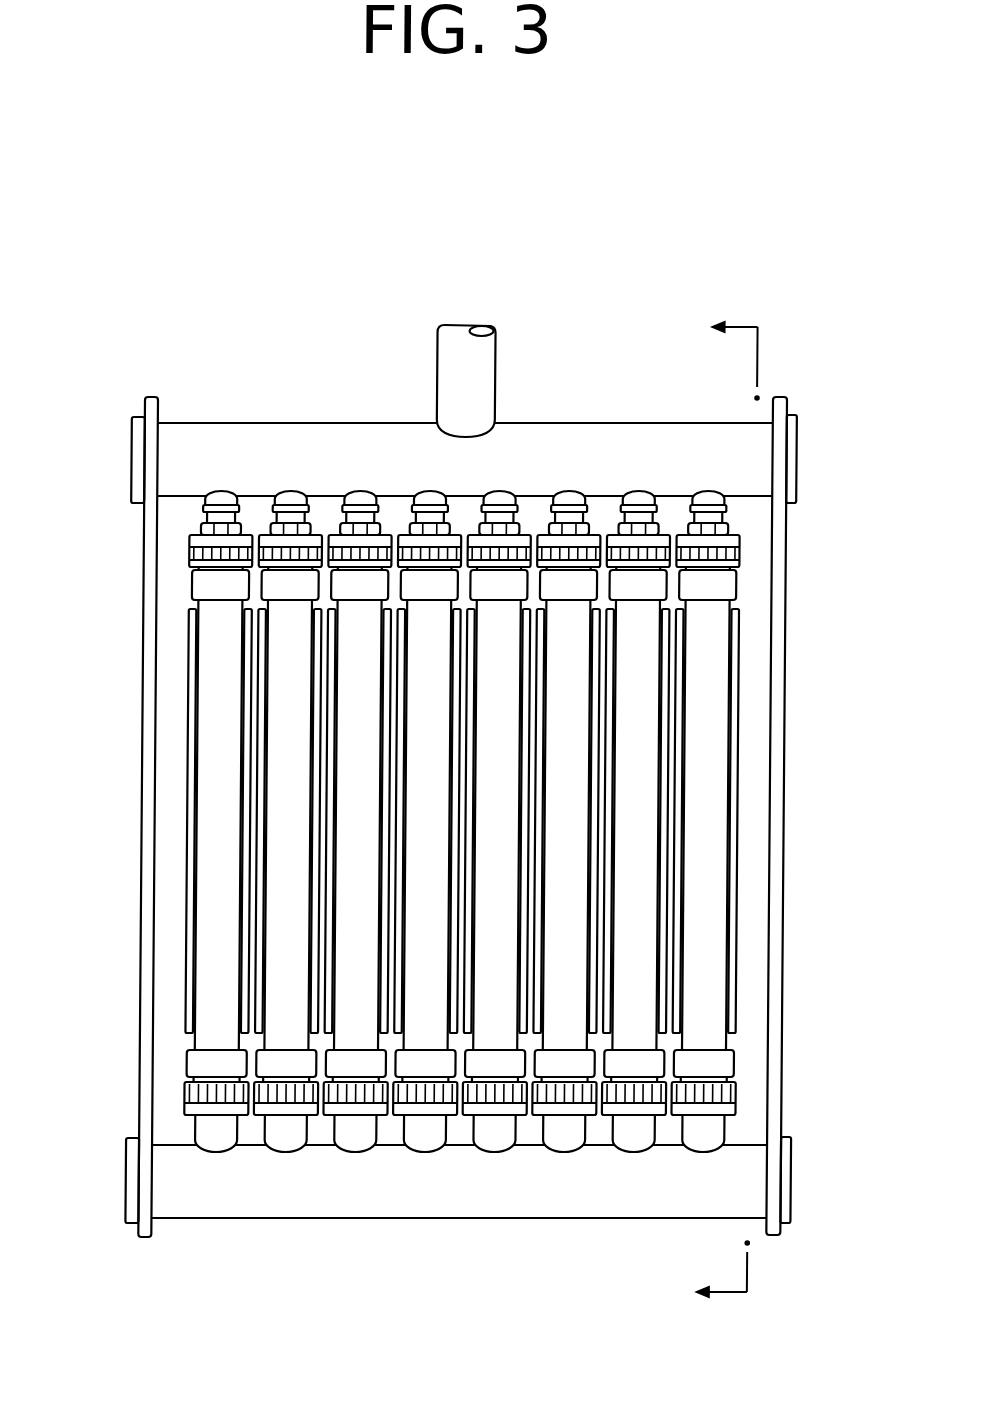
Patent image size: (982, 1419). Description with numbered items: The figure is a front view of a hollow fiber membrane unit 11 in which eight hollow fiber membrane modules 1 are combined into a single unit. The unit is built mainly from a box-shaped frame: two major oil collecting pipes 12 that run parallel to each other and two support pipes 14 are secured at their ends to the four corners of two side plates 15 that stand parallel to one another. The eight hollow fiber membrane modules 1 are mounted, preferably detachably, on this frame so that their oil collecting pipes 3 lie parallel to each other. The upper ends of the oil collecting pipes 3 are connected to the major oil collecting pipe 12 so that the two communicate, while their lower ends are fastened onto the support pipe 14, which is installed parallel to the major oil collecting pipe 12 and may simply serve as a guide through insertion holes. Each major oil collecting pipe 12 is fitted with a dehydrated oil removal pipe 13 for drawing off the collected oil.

The hollow fiber membrane unit 11 is at (810, 246).
The major oil collecting pipe 12 is at (203, 433).
The dehydrated oil removal pipe 13 is at (487, 325).
The support pipe 14 is at (480, 1195).
The side plate 15 is at (145, 608).
The hollow fiber membrane module 1 is at (212, 1003).
The oil collecting pipe 3 is at (719, 643).